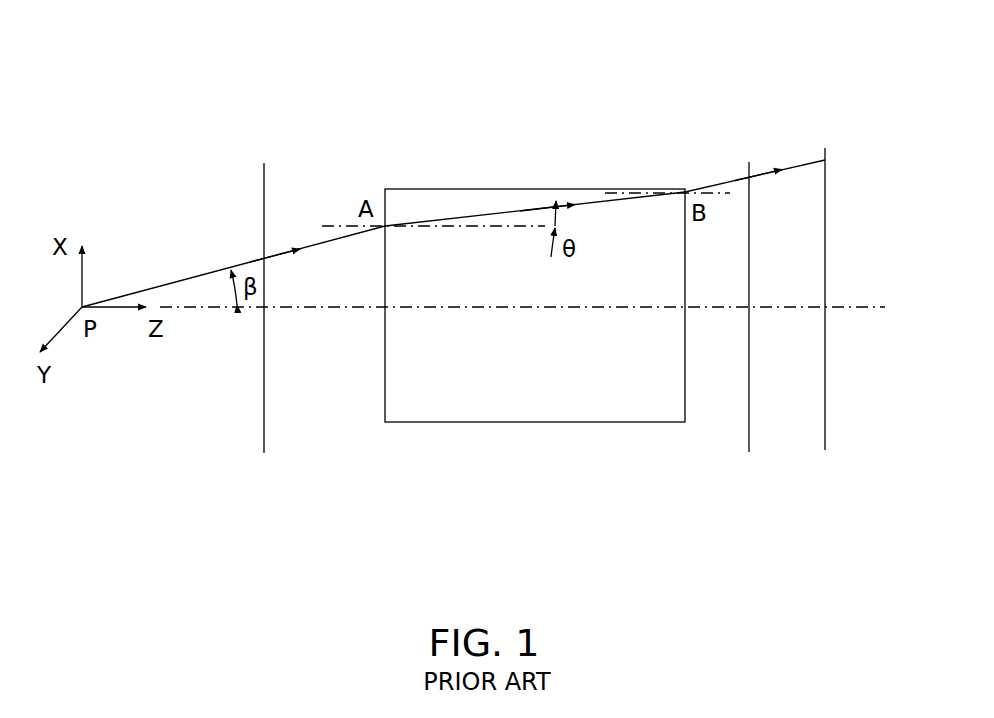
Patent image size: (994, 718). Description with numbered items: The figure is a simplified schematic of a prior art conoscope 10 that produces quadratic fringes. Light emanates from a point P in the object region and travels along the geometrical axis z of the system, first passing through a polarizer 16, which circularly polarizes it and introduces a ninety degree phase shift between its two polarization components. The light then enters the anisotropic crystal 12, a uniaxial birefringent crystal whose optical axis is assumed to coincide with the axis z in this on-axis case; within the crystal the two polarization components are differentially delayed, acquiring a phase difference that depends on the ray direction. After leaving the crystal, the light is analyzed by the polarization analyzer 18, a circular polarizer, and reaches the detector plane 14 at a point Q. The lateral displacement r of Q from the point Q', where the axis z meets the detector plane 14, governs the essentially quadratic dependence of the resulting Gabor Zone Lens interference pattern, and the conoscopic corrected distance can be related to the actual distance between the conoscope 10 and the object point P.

The conoscope 10 is at (628, 48).
The anisotropic crystal 12 is at (503, 423).
The detector plane 14 is at (825, 450).
The polarizer 16 is at (264, 453).
The polarization analyzer 18 is at (749, 452).